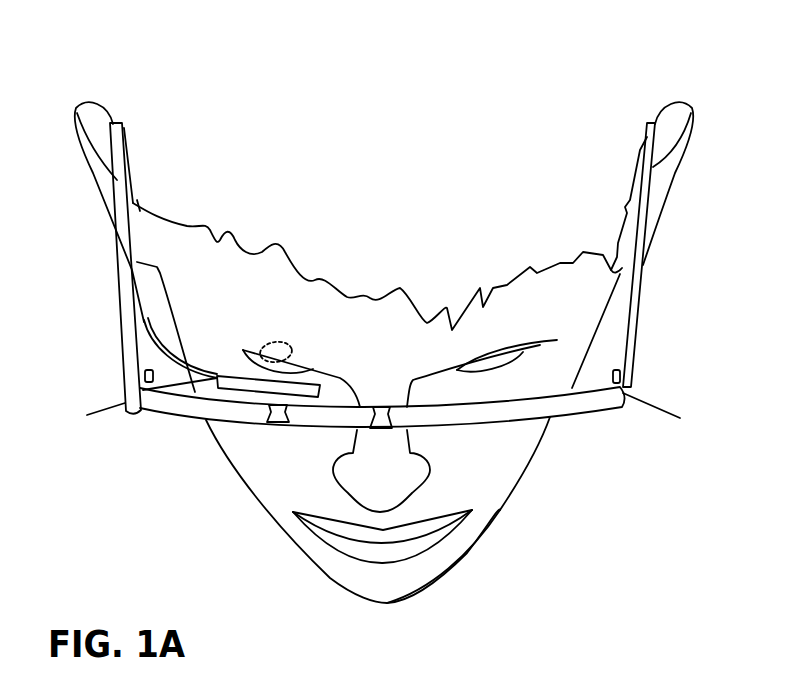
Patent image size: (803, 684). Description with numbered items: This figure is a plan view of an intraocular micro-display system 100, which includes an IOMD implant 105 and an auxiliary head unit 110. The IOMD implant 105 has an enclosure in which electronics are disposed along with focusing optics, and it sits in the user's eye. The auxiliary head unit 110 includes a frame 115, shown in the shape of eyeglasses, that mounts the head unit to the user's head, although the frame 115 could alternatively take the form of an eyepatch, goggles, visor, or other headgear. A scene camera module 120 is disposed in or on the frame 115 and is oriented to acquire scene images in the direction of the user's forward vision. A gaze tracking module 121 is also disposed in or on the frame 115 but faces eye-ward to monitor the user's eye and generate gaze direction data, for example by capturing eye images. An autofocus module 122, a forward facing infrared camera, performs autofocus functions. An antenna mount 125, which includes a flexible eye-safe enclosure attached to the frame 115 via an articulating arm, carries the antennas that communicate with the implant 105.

The IOMD system 100 is at (601, 82).
The IOMD implant 105 is at (295, 354).
The auxiliary head unit 110 is at (146, 466).
The frame 115 is at (588, 403).
The scene camera module 120 is at (130, 388).
The gaze tracking module 121 is at (278, 421).
The autofocus module 122 is at (381, 405).
The antenna mount 125 is at (209, 358).